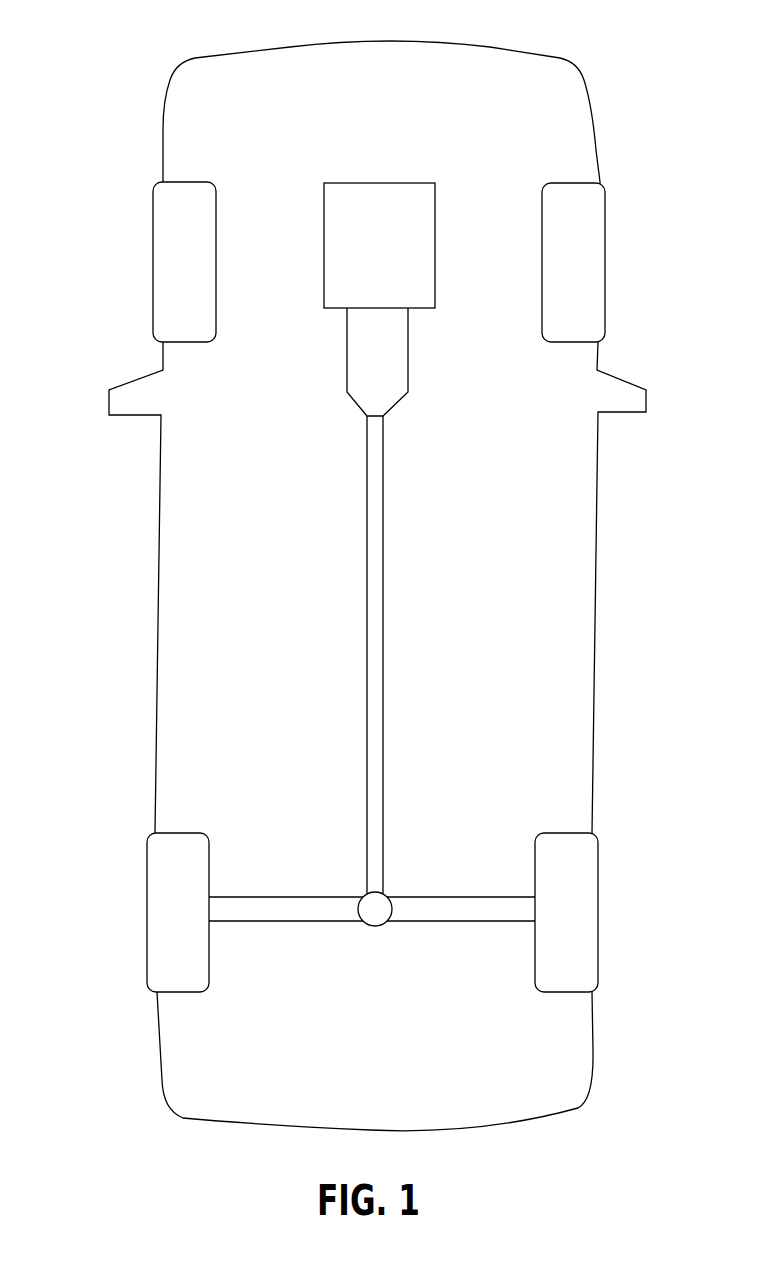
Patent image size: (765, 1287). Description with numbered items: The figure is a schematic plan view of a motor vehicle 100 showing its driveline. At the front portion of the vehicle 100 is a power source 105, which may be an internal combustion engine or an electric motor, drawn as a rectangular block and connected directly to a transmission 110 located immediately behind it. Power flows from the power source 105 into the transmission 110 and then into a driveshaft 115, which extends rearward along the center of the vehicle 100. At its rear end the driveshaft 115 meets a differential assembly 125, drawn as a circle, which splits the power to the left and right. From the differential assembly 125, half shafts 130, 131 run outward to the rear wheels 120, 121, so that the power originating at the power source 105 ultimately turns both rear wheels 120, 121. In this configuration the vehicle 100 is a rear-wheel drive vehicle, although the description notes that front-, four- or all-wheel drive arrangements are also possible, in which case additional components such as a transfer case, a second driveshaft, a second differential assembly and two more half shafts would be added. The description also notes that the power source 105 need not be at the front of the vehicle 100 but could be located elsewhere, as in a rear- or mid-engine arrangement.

The motor vehicle 100 is at (127, 133).
The power source 105 is at (396, 258).
The transmission 110 is at (395, 367).
The driveshaft 115 is at (383, 625).
The rear wheel 120 is at (197, 919).
The rear wheel 121 is at (583, 919).
The differential assembly 125 is at (370, 930).
The half shaft 130 is at (265, 925).
The half shaft 131 is at (477, 923).